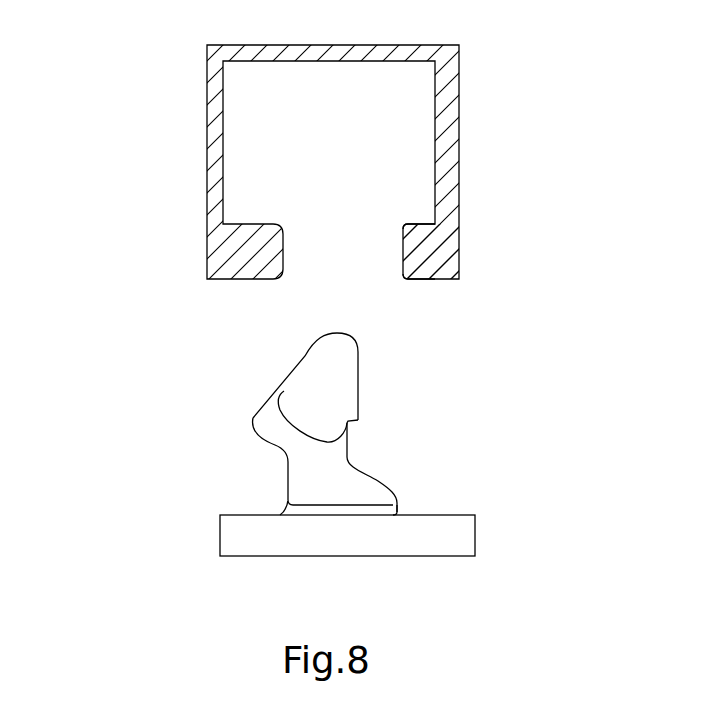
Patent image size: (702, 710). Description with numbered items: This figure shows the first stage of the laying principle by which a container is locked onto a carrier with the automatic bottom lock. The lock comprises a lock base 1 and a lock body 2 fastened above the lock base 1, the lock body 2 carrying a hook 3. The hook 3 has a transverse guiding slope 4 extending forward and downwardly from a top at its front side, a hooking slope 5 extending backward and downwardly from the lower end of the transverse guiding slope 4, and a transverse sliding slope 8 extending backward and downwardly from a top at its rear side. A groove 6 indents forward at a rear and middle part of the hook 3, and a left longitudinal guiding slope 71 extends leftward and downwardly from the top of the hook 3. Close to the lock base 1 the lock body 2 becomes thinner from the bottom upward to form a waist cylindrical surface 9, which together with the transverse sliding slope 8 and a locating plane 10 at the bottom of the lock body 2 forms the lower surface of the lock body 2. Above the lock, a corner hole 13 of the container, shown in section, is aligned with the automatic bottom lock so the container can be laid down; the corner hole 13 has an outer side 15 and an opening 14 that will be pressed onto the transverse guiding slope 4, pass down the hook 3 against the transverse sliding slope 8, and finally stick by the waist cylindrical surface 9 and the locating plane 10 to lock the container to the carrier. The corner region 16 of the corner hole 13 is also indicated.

The lock base 1 is at (427, 540).
The lock body 2 is at (319, 411).
The hook 3 is at (319, 411).
The transverse guiding slope 4 is at (310, 355).
The hooking slope 5 is at (270, 445).
The groove 6 is at (350, 422).
The transverse sliding slope 8 is at (358, 480).
The waist cylindrical surface 9 is at (307, 495).
The locating plane 10 is at (393, 507).
The corner hole 13 is at (415, 135).
The opening 14 is at (403, 250).
The outer side 15 is at (403, 279).
The notch corner 16 is at (403, 224).
The left longitudinal guiding slope 71 is at (307, 395).